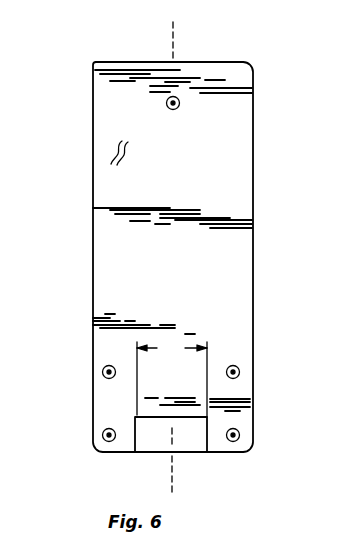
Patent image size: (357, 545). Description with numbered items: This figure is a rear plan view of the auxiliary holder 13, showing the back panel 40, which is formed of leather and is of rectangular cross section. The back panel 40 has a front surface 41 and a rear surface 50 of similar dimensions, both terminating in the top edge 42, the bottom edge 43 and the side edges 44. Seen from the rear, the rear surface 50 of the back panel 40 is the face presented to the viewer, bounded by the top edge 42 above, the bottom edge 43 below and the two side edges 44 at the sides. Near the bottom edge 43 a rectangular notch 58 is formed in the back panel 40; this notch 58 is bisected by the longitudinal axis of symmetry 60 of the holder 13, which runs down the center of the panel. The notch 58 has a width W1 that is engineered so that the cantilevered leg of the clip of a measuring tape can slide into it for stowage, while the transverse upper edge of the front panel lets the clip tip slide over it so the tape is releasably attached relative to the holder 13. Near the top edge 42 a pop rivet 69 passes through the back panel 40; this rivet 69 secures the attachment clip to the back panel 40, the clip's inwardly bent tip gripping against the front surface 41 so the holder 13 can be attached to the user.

The auxiliary holder 13 is at (270, 178).
The back panel 40 is at (93, 265).
The front surface 41 is at (230, 292).
The top edge 42 is at (113, 61).
The bottom edge 43 is at (113, 452).
The side edges 44 is at (93, 215).
The rear surface 50 is at (112, 150).
The rectangular notch 58 is at (155, 416).
The longitudinal axis of symmetry 60 is at (172, 30).
The pop rivet 69 is at (181, 107).
The width of the rectangular notch W1 is at (193, 377).